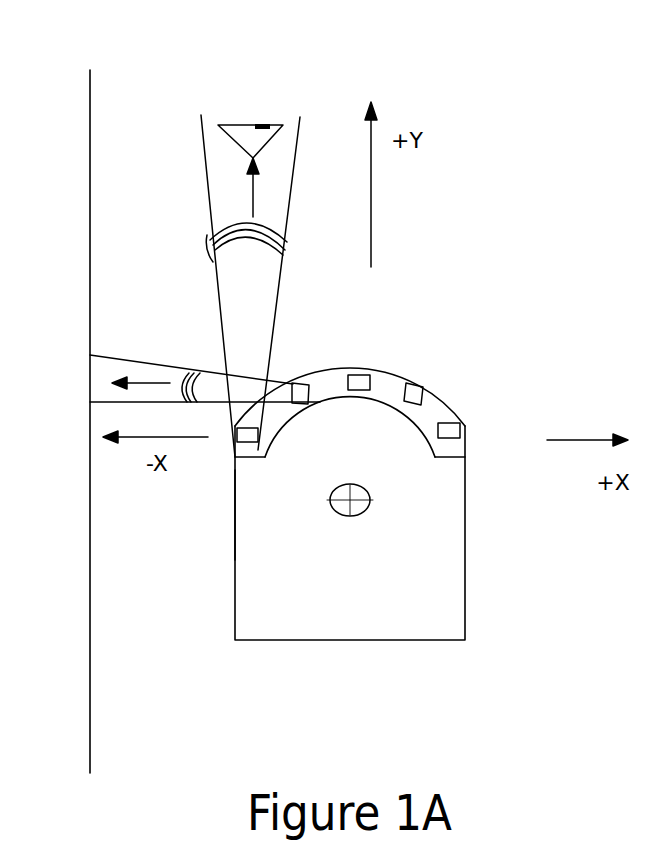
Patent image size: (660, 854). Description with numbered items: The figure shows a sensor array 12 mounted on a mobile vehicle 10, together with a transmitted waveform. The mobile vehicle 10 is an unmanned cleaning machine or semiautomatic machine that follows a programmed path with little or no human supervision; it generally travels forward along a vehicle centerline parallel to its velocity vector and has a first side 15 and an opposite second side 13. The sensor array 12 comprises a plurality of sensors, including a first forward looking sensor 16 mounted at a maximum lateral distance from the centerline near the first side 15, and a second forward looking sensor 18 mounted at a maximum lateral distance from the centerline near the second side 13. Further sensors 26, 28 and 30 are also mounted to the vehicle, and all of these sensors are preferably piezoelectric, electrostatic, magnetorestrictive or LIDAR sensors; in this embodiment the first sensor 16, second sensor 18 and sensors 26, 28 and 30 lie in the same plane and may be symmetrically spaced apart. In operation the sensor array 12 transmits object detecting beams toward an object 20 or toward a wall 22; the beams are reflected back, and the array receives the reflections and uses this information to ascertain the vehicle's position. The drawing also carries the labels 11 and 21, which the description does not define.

The mobile vehicle 10 is at (508, 611).
The curved top surface 11 is at (408, 382).
The sensor array 12 is at (457, 450).
The second side 13 is at (465, 498).
The first side 15 is at (235, 518).
The first forward looking sensor 16 is at (237, 453).
The second forward looking sensor 18 is at (460, 430).
The object 20 is at (283, 124).
The center reference point 21 is at (350, 500).
The wall 22 is at (90, 673).
The sensor 26 is at (300, 383).
The sensor 28 is at (360, 375).
The sensor 30 is at (423, 388).